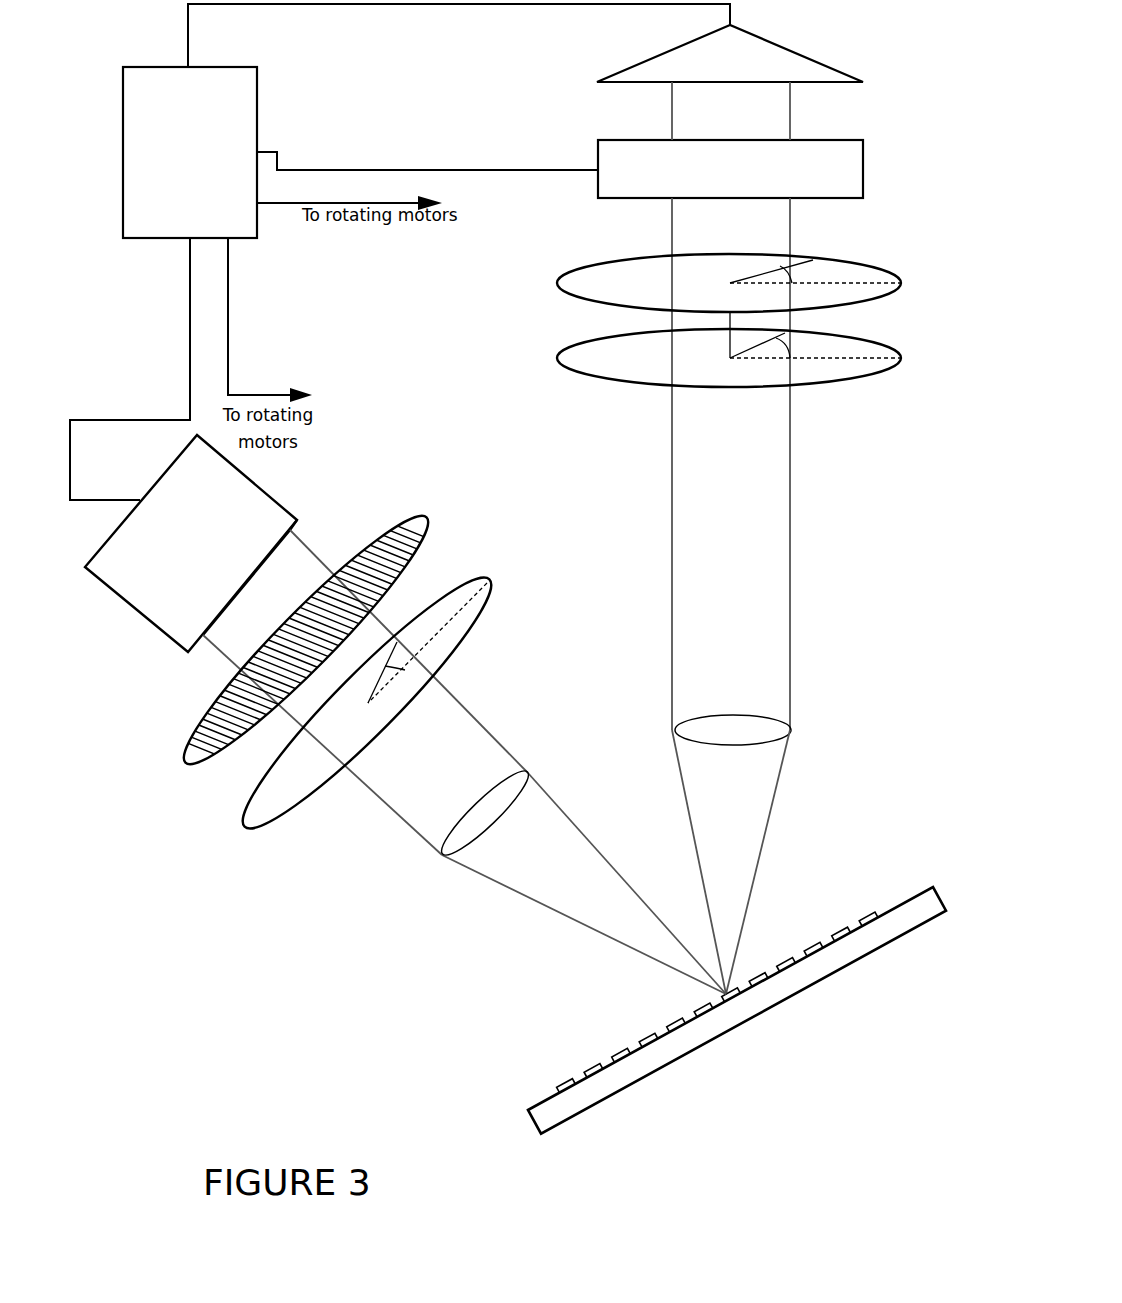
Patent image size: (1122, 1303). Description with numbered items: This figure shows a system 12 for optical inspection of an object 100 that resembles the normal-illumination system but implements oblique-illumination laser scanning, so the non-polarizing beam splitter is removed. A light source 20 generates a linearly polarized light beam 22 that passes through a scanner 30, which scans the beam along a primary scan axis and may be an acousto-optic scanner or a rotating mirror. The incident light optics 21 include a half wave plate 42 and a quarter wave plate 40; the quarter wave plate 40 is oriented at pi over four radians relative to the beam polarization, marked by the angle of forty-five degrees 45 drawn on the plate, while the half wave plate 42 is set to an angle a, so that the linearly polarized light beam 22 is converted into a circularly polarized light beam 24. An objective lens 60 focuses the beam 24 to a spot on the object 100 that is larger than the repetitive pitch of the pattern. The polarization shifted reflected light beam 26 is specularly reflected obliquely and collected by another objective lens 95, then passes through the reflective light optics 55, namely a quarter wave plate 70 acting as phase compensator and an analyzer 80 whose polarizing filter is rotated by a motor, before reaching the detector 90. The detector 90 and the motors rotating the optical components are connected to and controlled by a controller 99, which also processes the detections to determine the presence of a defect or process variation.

The system 12 is at (530, 1197).
The light source 20 is at (776, 77).
The incident light optics 21 is at (500, 300).
The linearly polarized light beam 22 is at (796, 226).
The circularly polarized light beam 24 is at (670, 405).
The polarization shifted reflected light beam 26 is at (690, 820).
The scanner 30 is at (793, 183).
The quarter wave plate 40 is at (598, 384).
The half wave plate 42 is at (616, 262).
The 45 degree angle 45 is at (608, 493).
The reflective light optics 55 is at (218, 908).
The objective lens 60 is at (760, 716).
The quarter wave plate 70 is at (490, 581).
The analyzer 80 is at (432, 516).
The detector 90 is at (191, 543).
The other objective lens 95 is at (523, 775).
The controller 99 is at (178, 176).
The object 100 is at (540, 1103).
The angle a is at (816, 268).